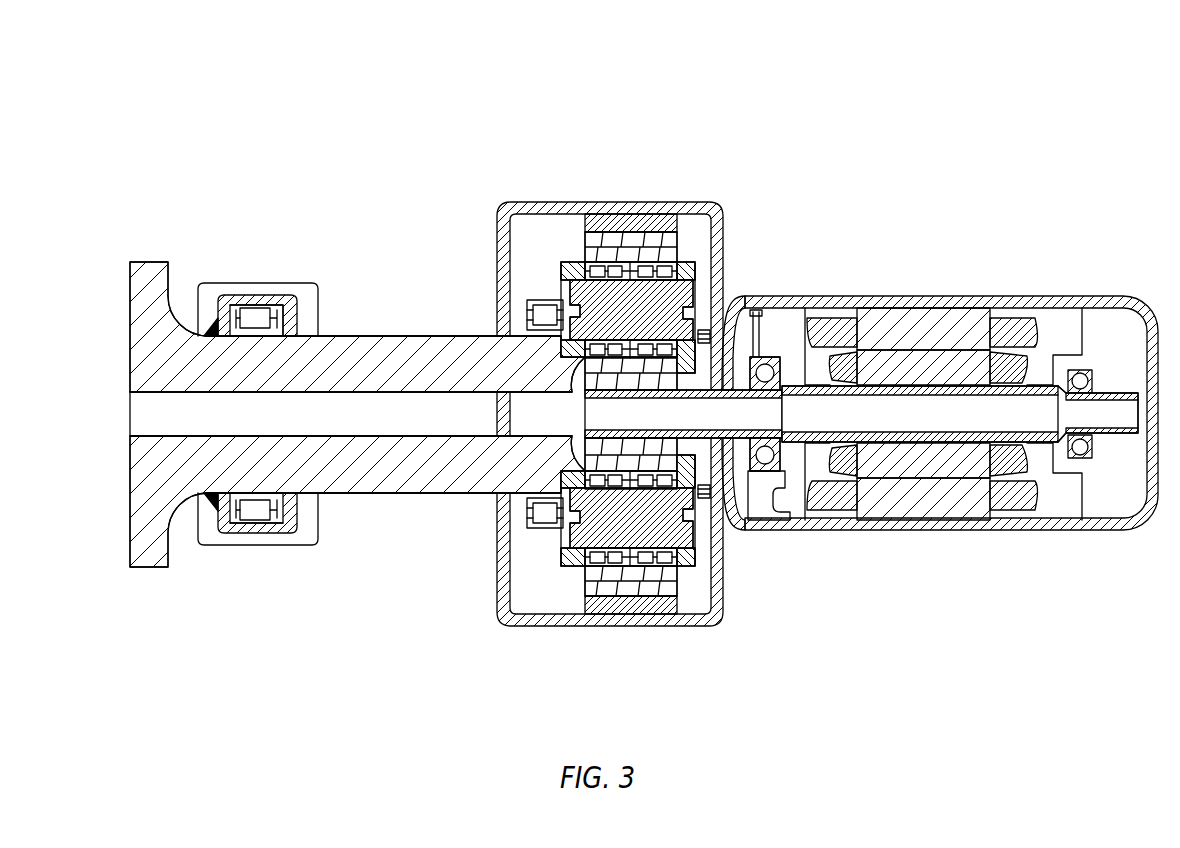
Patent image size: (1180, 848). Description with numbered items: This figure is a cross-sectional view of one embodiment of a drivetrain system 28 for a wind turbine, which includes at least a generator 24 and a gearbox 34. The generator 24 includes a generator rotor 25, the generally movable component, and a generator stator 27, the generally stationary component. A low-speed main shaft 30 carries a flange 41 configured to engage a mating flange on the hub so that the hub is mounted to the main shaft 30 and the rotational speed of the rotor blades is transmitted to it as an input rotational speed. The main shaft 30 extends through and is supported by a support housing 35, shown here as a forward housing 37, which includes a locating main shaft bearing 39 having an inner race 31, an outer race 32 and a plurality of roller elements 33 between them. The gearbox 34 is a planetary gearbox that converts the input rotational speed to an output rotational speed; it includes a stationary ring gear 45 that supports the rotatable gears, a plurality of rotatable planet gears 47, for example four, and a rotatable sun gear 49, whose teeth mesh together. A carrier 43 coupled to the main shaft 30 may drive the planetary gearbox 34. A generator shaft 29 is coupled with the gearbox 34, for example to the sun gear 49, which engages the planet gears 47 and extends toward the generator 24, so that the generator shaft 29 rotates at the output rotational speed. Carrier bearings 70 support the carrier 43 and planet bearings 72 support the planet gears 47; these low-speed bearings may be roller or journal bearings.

The generator 24 is at (1030, 284).
The generator rotor 25 is at (945, 352).
The generator stator 27 is at (975, 310).
The drivetrain system 28 is at (383, 101).
The generator shaft 29 is at (930, 418).
The main shaft 30 is at (386, 333).
The inner race 31 is at (276, 330).
The outer race 32 is at (272, 311).
The roller elements 33 is at (263, 317).
The gearbox 34 is at (594, 201).
The support housing 35 is at (258, 571).
The forward housing 37 is at (250, 293).
The main shaft bearing 39 is at (207, 316).
The flange 41 is at (137, 291).
The carrier 43 is at (559, 280).
The stationary ring gear 45 is at (641, 233).
The planet gears 47 is at (678, 358).
The sun gear 49 is at (620, 434).
The carrier bearings 70 is at (525, 305).
The planet bearings 72 is at (588, 266).